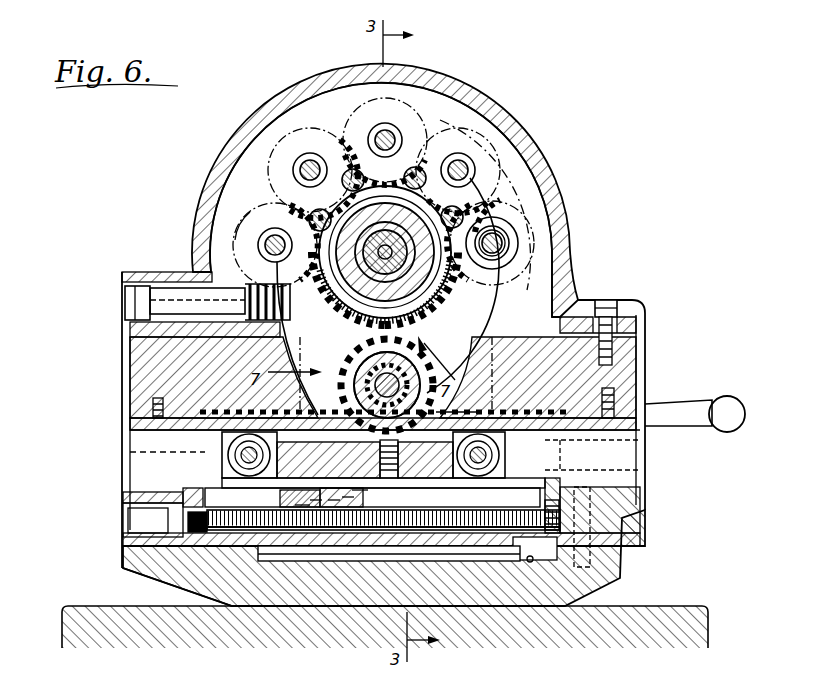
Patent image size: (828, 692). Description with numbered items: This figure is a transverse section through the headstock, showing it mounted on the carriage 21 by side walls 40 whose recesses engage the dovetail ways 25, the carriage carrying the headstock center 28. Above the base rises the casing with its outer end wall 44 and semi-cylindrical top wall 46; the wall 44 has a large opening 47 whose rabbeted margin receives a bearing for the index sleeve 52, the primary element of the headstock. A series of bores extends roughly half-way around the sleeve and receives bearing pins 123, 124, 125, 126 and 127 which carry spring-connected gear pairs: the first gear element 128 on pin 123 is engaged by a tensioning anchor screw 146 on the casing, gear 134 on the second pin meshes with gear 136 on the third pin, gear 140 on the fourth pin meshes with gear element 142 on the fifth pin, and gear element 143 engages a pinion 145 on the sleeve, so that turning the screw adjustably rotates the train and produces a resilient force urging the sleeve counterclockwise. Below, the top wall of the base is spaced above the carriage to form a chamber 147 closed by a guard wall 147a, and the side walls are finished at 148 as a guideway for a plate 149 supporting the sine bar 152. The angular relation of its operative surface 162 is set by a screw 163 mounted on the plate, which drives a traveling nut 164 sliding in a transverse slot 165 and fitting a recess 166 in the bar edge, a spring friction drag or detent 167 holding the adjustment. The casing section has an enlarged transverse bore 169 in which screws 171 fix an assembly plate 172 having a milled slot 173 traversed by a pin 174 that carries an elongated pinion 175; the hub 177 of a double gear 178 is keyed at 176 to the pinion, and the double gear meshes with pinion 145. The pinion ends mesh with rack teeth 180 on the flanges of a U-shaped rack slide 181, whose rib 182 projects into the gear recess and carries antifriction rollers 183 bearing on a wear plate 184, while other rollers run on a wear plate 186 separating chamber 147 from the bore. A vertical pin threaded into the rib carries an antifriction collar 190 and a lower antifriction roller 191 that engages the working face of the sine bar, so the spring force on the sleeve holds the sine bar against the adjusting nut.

The carriage 21 is at (657, 585).
The dovetail ways 25 is at (236, 578).
The center 28 is at (327, 310).
The side walls 40 is at (617, 555).
The outer end wall 44 is at (520, 190).
The semi-cylindrically shaped top wall 46 is at (478, 138).
The opening 47 is at (335, 313).
The index sleeve 52 is at (490, 296).
The bearing pin 123 is at (263, 230).
The bearing pin 124 is at (300, 170).
The bearing pin 125 is at (332, 106).
The bearing pin 126 is at (517, 167).
The bearing pin 127 is at (504, 247).
The gear element 128 is at (243, 240).
The gear 134 is at (280, 150).
The gear 136 is at (290, 101).
The gear 140 is at (463, 168).
The gear element 142 is at (462, 243).
The gear element 143 is at (465, 228).
The pinion 145 is at (495, 206).
The tensioning anchor screw 146 is at (172, 293).
The chamber 147 is at (520, 490).
The guard wall 147a is at (360, 490).
The longitudinal guideway 148 is at (530, 562).
The plate 149 is at (562, 482).
The sine bar 152 is at (348, 497).
The operative surface 162 is at (335, 500).
The screw 163 is at (207, 522).
The traveling nut 164 is at (300, 508).
The transverse slot 165 is at (427, 493).
The recess 166 is at (318, 500).
The spring friction drag or detent 167 is at (283, 502).
The transverse bore 169 is at (597, 300).
The screws 171 is at (606, 300).
The assembly plate 172 is at (493, 360).
The milled slot 173 is at (285, 340).
The pin 174 is at (486, 366).
The elongated pinion 175 is at (357, 393).
The key 176 is at (388, 378).
The hub 177 is at (357, 366).
The double gear 178 is at (331, 359).
The rack teeth 180 is at (203, 433).
The U-shaped rack slide 181 is at (225, 470).
The rib 182 is at (306, 448).
The antifriction rollers 183 is at (227, 453).
The wear plate 184 is at (130, 425).
The wear plate 186 is at (499, 474).
The antifriction collar 190 is at (447, 478).
The antifriction roller 191 is at (402, 550).